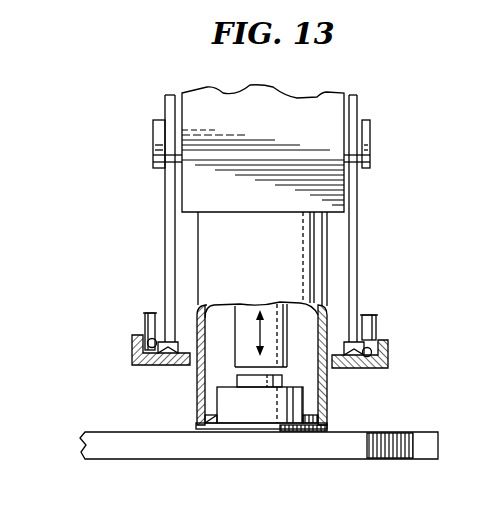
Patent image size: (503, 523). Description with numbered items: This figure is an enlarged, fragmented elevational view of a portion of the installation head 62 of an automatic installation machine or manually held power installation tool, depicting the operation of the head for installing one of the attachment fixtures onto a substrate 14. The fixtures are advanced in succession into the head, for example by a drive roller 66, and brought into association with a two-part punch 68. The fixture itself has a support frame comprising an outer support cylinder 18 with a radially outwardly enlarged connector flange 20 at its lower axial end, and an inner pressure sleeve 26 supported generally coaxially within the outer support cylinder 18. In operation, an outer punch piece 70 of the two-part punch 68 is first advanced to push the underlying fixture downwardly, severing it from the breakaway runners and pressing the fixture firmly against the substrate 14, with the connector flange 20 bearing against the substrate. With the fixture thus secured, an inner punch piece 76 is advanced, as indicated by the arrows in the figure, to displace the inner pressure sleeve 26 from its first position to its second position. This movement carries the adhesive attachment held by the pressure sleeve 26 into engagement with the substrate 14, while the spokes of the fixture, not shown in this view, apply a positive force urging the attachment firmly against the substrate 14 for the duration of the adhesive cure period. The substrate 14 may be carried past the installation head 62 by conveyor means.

The substrate 14 is at (413, 447).
The outer support cylinder 18 is at (280, 407).
The connector flange 20 is at (270, 430).
The inner pressure sleeve 26 is at (237, 380).
The installation head 62 is at (414, 202).
The drive roller 66 is at (165, 184).
The two-part punch 68 is at (155, 255).
The outer punch piece 70 is at (197, 400).
The inner punch piece 76 is at (273, 325).